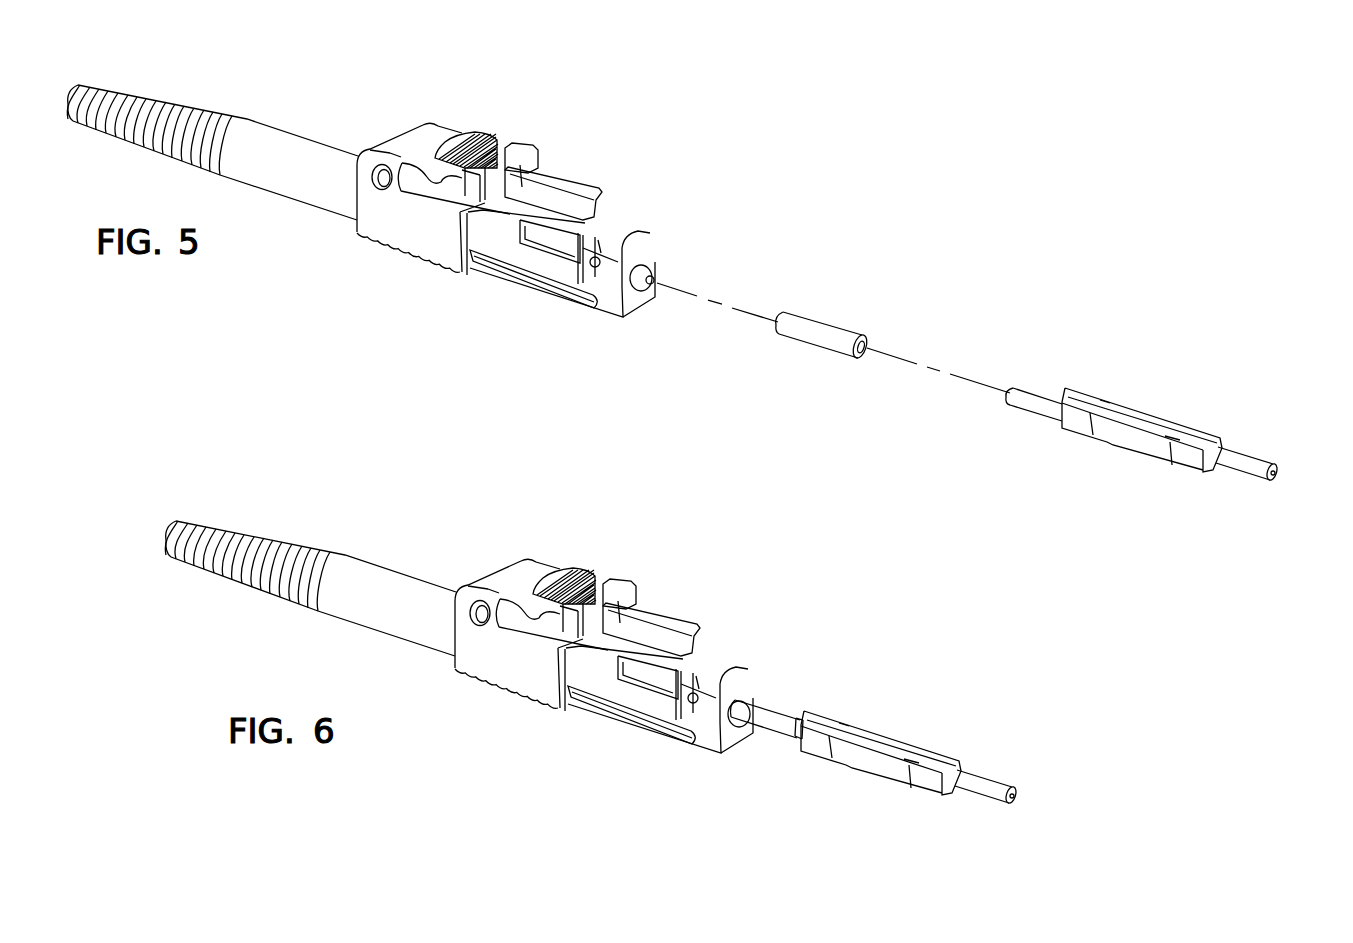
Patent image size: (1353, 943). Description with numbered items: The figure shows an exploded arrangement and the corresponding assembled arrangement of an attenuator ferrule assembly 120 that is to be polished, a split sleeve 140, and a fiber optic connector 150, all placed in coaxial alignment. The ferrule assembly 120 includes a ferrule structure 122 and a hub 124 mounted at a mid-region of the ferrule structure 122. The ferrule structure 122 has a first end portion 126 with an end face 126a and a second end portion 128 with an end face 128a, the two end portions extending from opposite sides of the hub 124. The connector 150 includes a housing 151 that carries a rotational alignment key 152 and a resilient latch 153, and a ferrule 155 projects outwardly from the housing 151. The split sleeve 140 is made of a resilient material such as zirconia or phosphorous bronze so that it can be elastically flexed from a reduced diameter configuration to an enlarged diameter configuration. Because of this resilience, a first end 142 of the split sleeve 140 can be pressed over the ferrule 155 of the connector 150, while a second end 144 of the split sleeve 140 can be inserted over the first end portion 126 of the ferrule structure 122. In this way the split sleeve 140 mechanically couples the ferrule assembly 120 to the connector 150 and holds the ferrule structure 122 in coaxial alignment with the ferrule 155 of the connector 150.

In FIG. 5, the attenuator ferrule assembly 120 is at (1150, 358).
In FIG. 6, the attenuator ferrule assembly 120 is at (887, 681).
In FIG. 5, the ferrule structure 122 is at (1049, 377).
In FIG. 5, the hub 124 is at (1167, 417).
In FIG. 6, the hub 124 is at (903, 740).
In FIG. 5, the first end portion 126 is at (1030, 410).
In FIG. 5, the end face 126a is at (1005, 395).
In FIG. 5, the second end portion 128 is at (1237, 477).
In FIG. 6, the second end portion 128 is at (977, 797).
In FIG. 5, the end face 128a is at (1274, 463).
In FIG. 5, the split sleeve 140 is at (823, 320).
In FIG. 6, the split sleeve 140 is at (762, 707).
In FIG. 5, the first end 142 is at (778, 326).
In FIG. 6, the first end 142 is at (730, 721).
In FIG. 6, the second end 144 is at (798, 744).
In FIG. 5, the connector 150 is at (466, 125).
In FIG. 6, the connector 150 is at (565, 553).
In FIG. 5, the housing 151 is at (521, 292).
In FIG. 6, the housing 151 is at (622, 728).
In FIG. 5, the rotational alignment key 152 is at (571, 170).
In FIG. 6, the rotational alignment key 152 is at (666, 611).
In FIG. 5, the resilient latch 153 is at (523, 143).
In FIG. 5, the ferrule 155 is at (655, 268).